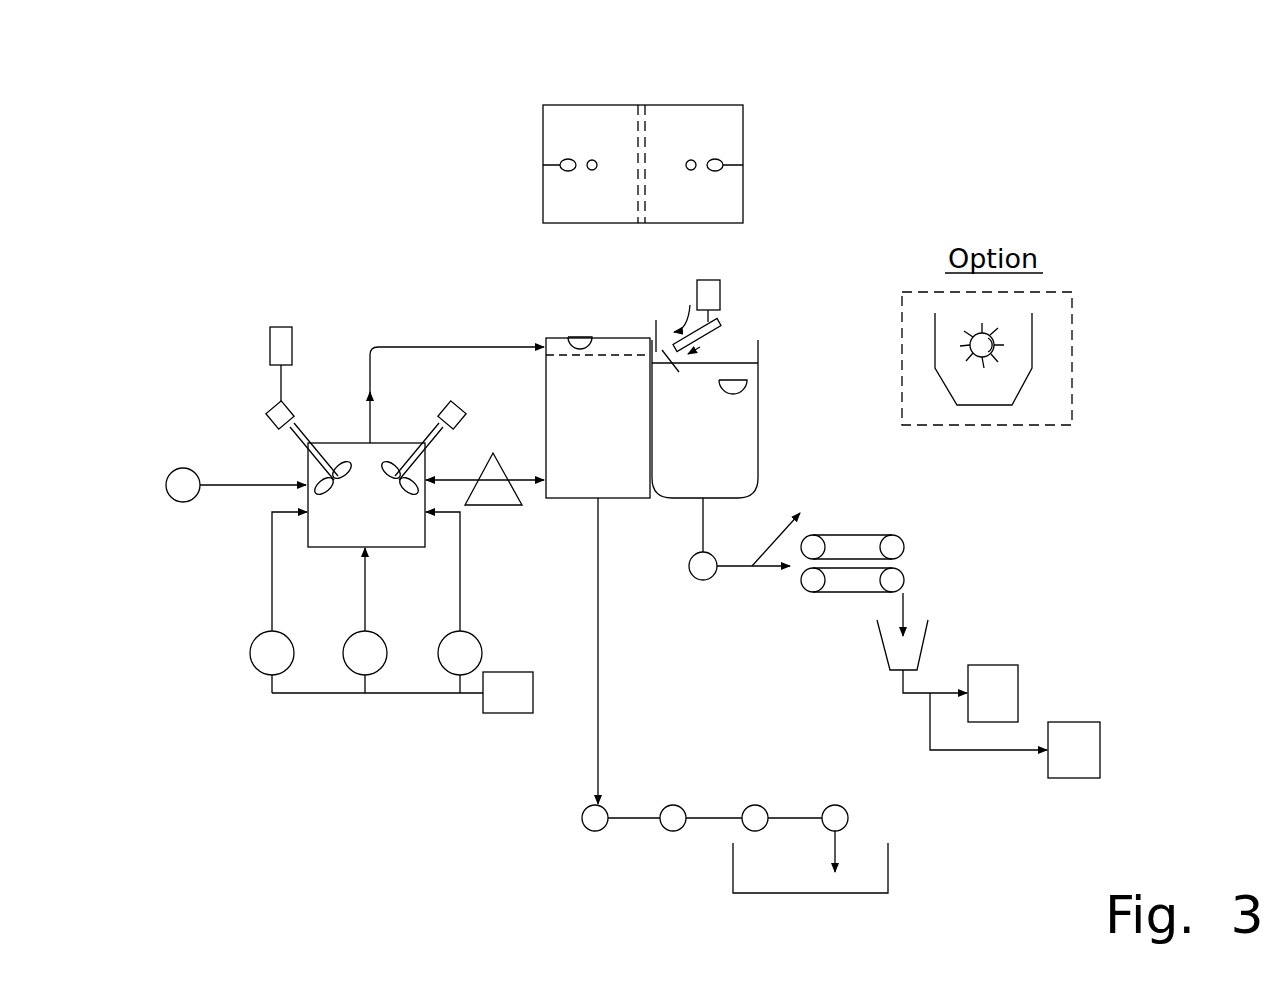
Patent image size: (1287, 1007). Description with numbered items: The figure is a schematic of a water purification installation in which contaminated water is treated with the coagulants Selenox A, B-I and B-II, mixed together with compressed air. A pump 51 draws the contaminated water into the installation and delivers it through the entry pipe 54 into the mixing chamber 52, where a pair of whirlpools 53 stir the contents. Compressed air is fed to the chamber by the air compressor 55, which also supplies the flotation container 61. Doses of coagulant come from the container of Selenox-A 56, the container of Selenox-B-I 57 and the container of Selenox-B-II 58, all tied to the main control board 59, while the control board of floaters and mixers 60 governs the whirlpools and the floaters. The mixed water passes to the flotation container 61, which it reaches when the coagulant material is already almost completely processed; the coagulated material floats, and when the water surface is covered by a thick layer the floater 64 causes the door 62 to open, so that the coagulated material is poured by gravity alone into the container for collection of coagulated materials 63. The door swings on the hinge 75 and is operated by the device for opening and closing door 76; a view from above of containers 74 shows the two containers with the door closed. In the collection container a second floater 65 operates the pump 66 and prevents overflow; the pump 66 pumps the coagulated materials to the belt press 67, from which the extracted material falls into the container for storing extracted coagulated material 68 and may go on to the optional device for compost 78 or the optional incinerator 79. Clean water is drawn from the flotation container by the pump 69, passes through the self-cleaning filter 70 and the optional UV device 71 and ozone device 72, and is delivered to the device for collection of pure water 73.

The pump 51 is at (178, 467).
The mixing chamber 52 is at (366, 495).
The whirlpools 53 is at (268, 408).
The entry pipe 54 is at (242, 482).
The air compressor 55 is at (485, 481).
The container of Selenox-A 56 is at (278, 602).
The container of Selenox-B-I 57 is at (365, 620).
The container of Selenox-B-II 58 is at (454, 602).
The main control board 59 is at (402, 692).
The control board of floaters and mixers 60 is at (283, 327).
The flotation container 61 is at (598, 571).
The door 62 is at (679, 377).
The container for collection of coagulated materials 63 is at (705, 446).
The floater 64 is at (580, 330).
The floater 65 is at (740, 395).
The pump 66 is at (707, 580).
The belt press 67 is at (903, 545).
The container for storing extracted coagulated material 68 is at (880, 655).
The pump 69 is at (583, 825).
The self-cleaning filter 70 is at (680, 805).
The UV device 71 is at (762, 808).
The ozone device 72 is at (843, 808).
The device for collection of pure water 73 is at (890, 862).
The view from above of containers 74 is at (745, 185).
The hinge 75 is at (656, 320).
The device for opening and closing door 76 is at (712, 292).
The device for compost 78 is at (995, 665).
The incinerator 79 is at (1080, 722).